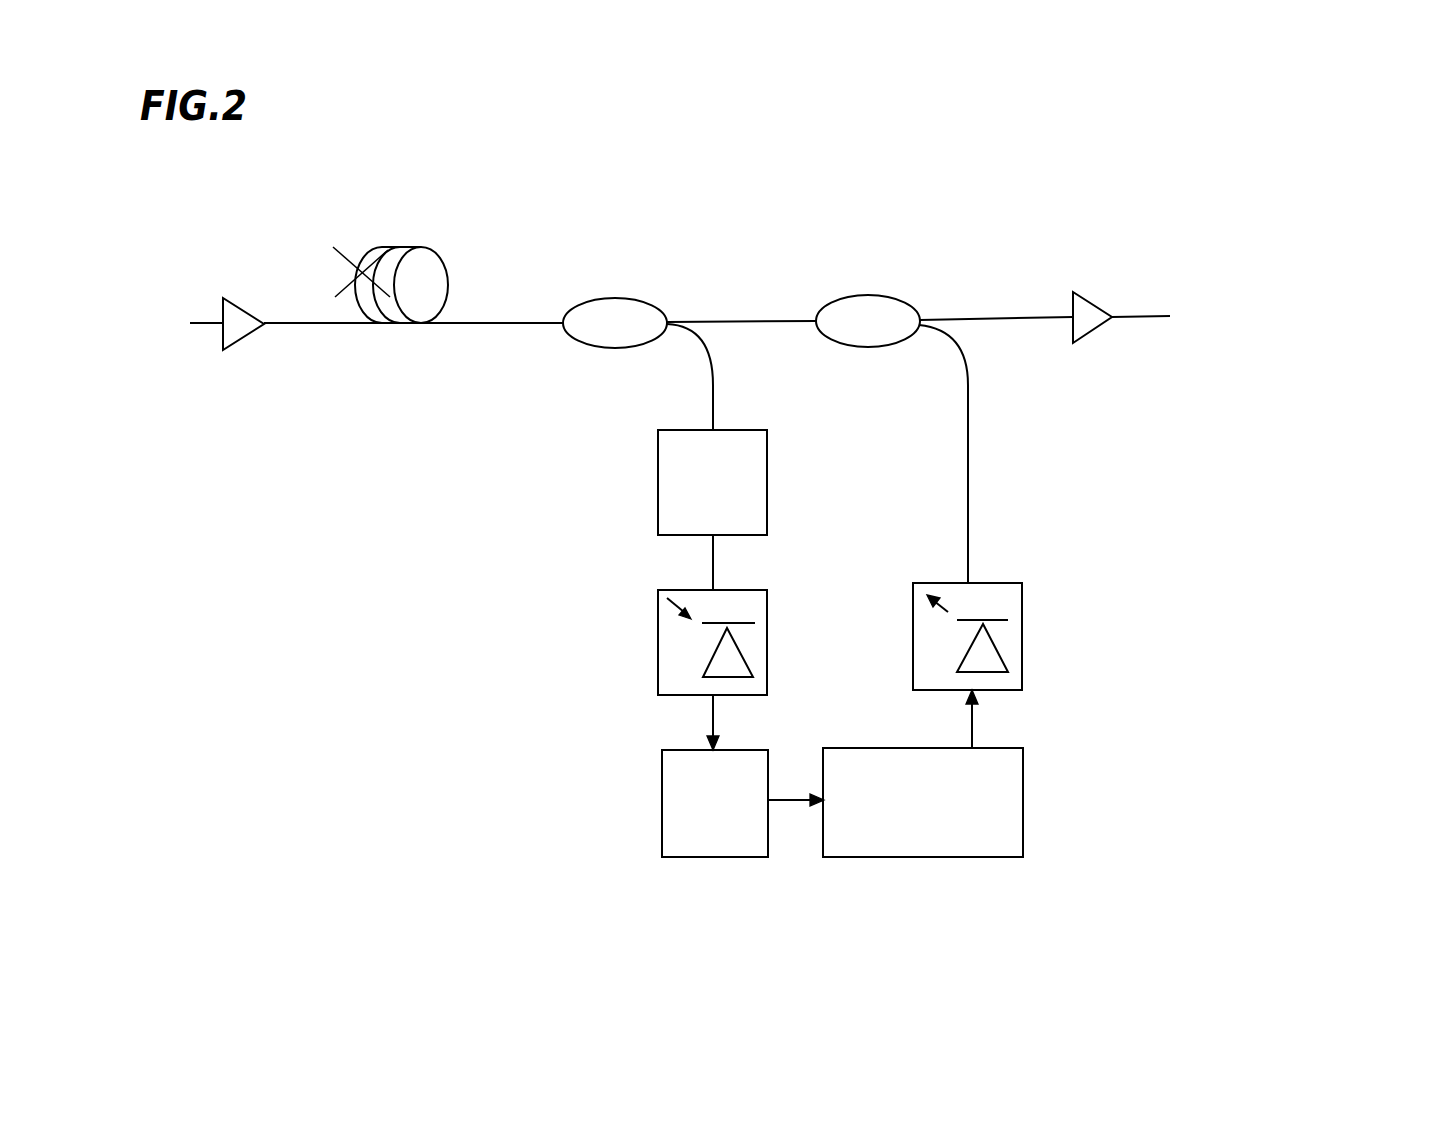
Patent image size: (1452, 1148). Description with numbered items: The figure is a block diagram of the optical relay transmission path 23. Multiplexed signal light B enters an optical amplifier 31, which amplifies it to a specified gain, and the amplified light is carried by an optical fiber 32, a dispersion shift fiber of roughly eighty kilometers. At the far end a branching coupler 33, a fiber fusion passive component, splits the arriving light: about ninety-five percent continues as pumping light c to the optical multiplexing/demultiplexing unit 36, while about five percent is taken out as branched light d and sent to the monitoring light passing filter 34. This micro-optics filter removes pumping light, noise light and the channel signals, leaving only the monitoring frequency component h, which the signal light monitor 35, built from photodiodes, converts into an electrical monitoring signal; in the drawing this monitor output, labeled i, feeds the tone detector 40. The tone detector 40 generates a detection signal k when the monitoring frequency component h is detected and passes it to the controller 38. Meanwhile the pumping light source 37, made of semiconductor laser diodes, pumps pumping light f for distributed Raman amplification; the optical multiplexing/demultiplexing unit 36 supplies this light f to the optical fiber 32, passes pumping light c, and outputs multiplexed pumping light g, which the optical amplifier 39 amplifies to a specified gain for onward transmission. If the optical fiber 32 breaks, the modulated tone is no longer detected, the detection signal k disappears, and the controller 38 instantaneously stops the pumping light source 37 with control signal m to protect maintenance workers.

The optical relay transmission path 23 is at (806, 168).
The optical amplifier 31 is at (245, 340).
The optical fiber 32 is at (317, 325).
The branching coupler 33 is at (583, 298).
The monitoring light passing filter 34 is at (750, 430).
The signal light monitor 35 is at (742, 587).
The optical multiplexing/demultiplexing unit 36 is at (872, 294).
The pumping light source 37 is at (1022, 645).
The controller 38 is at (973, 857).
The optical amplifier 39 is at (1092, 333).
The tone detector 40 is at (690, 857).
The multiplexed signal light B is at (184, 327).
The pumping light c is at (710, 322).
The branched light d is at (693, 338).
The multiplexed pumping light g is at (1002, 318).
The monitoring frequency component h is at (713, 562).
The pumping light f is at (968, 478).
The monitor output signal i is at (713, 718).
The detection signal k is at (797, 795).
The control signal m is at (972, 722).